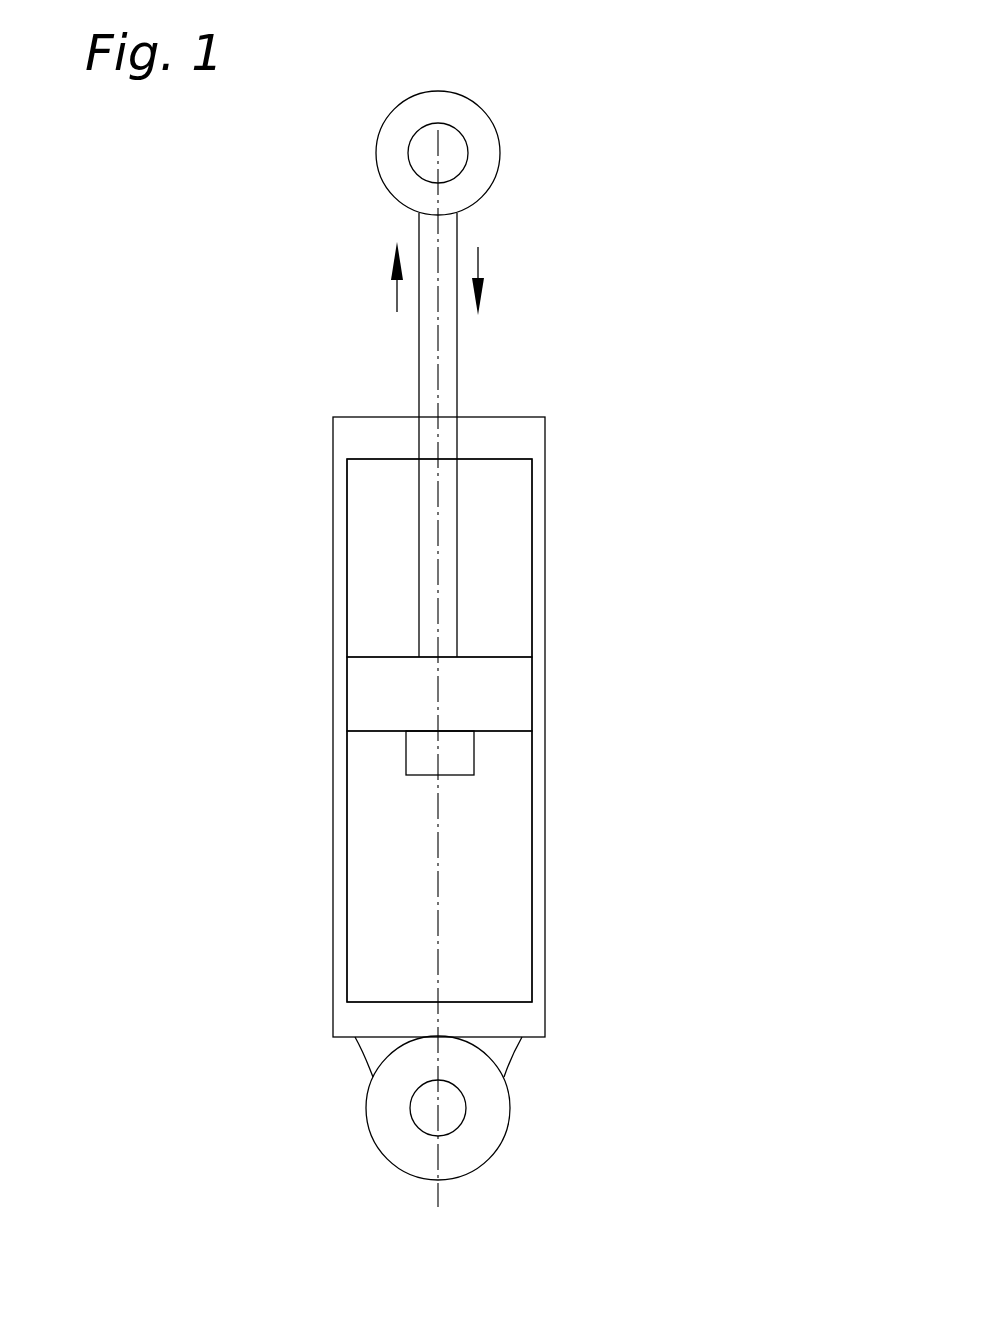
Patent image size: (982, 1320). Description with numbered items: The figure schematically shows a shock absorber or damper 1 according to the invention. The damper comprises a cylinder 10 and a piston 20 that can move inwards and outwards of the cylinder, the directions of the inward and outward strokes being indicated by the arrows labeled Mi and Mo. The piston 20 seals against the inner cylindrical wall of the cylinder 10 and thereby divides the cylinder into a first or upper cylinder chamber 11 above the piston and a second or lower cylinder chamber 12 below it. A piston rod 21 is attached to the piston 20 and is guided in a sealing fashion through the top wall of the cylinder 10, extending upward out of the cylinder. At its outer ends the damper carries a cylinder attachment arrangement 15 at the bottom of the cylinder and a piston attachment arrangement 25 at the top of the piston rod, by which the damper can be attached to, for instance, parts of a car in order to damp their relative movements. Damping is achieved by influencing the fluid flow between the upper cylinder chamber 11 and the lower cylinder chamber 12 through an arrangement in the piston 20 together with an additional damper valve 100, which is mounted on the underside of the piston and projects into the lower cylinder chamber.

The damper 1 is at (592, 237).
The cylinder 10 is at (538, 621).
The first or upper cylinder chamber 11 is at (508, 522).
The second or lower cylinder chamber 12 is at (503, 908).
The cylinder attachment arrangement 15 is at (490, 1127).
The piston 20 is at (508, 695).
The piston rod 21 is at (445, 235).
The piston attachment arrangement 25 is at (477, 170).
The damper valve 100 is at (458, 757).